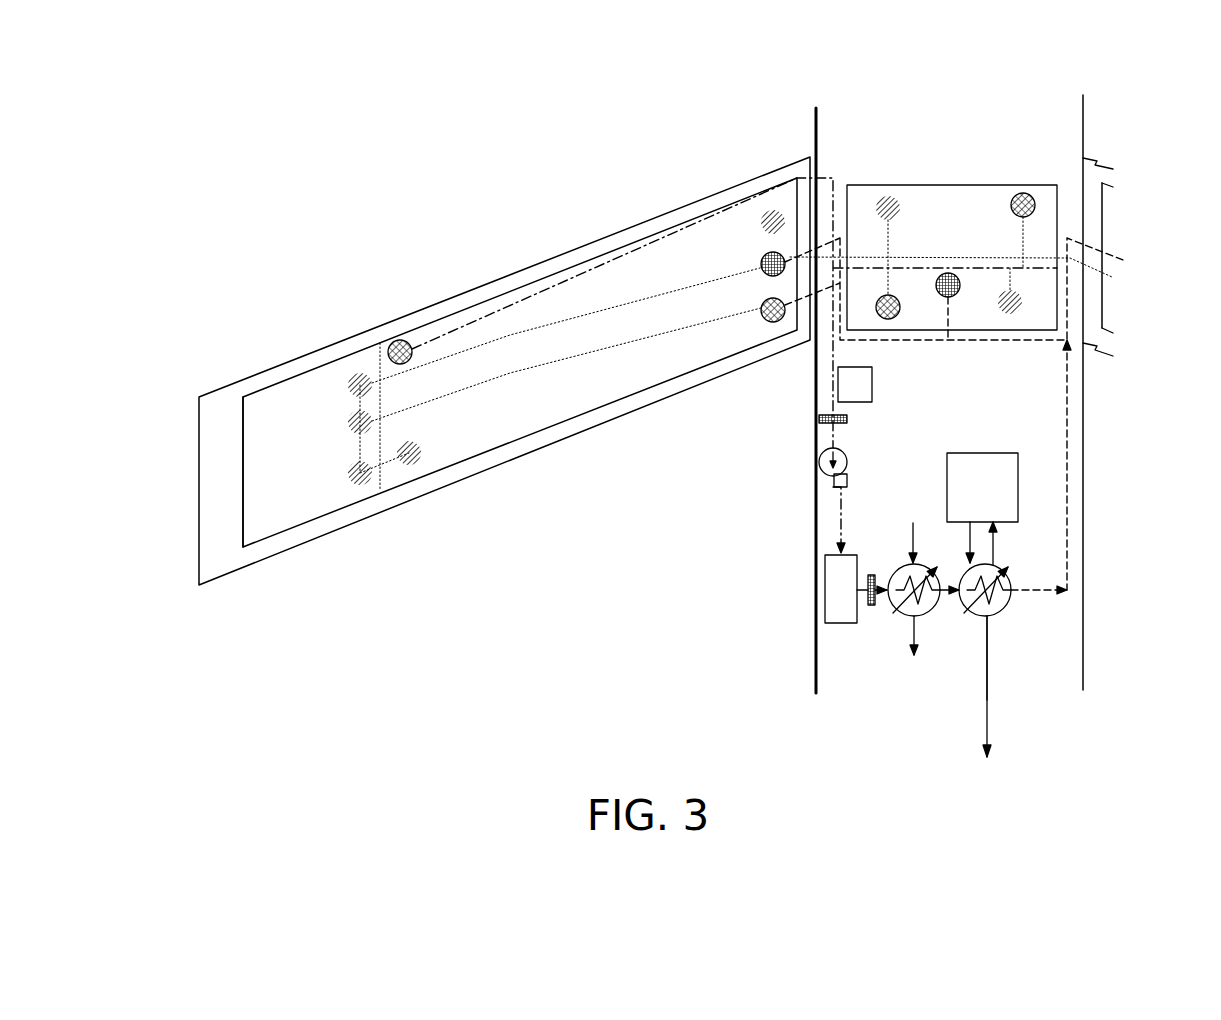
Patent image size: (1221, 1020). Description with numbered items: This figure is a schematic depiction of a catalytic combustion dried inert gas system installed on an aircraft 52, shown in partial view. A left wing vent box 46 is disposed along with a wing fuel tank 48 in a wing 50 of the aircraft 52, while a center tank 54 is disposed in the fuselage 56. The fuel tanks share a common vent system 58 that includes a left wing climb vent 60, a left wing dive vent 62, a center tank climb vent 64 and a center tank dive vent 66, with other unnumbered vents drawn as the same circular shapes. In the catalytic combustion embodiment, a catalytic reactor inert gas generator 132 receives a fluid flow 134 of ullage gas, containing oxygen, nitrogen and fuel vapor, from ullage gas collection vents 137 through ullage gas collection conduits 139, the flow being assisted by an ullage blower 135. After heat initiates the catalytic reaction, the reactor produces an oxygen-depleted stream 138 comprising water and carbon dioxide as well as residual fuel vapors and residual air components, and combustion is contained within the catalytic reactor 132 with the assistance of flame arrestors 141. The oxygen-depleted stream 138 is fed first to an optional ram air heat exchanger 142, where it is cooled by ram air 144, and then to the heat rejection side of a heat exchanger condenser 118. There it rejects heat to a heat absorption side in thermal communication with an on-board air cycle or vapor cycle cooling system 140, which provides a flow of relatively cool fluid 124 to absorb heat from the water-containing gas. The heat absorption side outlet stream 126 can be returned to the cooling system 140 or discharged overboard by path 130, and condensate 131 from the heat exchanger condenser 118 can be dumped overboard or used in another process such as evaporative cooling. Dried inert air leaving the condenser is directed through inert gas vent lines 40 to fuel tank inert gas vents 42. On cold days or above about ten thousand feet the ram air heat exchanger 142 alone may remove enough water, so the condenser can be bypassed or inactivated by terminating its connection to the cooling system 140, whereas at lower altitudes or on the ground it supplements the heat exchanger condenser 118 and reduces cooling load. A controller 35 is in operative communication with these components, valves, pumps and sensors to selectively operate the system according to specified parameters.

The controller 35 is at (872, 385).
The inert gas vent lines 40 is at (1067, 393).
The fuel tank inert gas vents 42 is at (760, 263).
The left wing vent box 46 is at (242, 410).
The wing fuel tank 48 is at (483, 300).
The wing 50 is at (485, 472).
The aircraft 52 is at (302, 142).
The center tank 54 is at (927, 185).
The fuselage 56 is at (815, 540).
The common vent system 58 is at (692, 310).
The left wing climb vent 60 is at (768, 212).
The left wing dive vent 62 is at (410, 462).
The center tank climb vent 64 is at (880, 200).
The center tank dive vent 66 is at (1005, 312).
The heat exchanger condenser 118 is at (1002, 615).
The flow of relatively cool fluid 124 is at (970, 537).
The heat absorption side outlet stream 126 is at (992, 545).
The overboard discharge path 130 is at (985, 673).
The condensate 131 is at (890, 613).
The catalytic reactor inert gas generator 132 is at (833, 623).
The fluid flow 134 is at (840, 508).
The ullage blower 135 is at (819, 463).
The ullage gas collection vents 137 is at (397, 340).
The oxygen-depleted stream 138 is at (868, 607).
The ullage gas collection conduits 139 is at (545, 293).
The on-board air cycle or vapor cycle cooling system 140 is at (947, 476).
The flame arrestors 141 is at (819, 420).
The ram air heat exchanger 142 is at (937, 613).
The ram air 144 is at (913, 554).